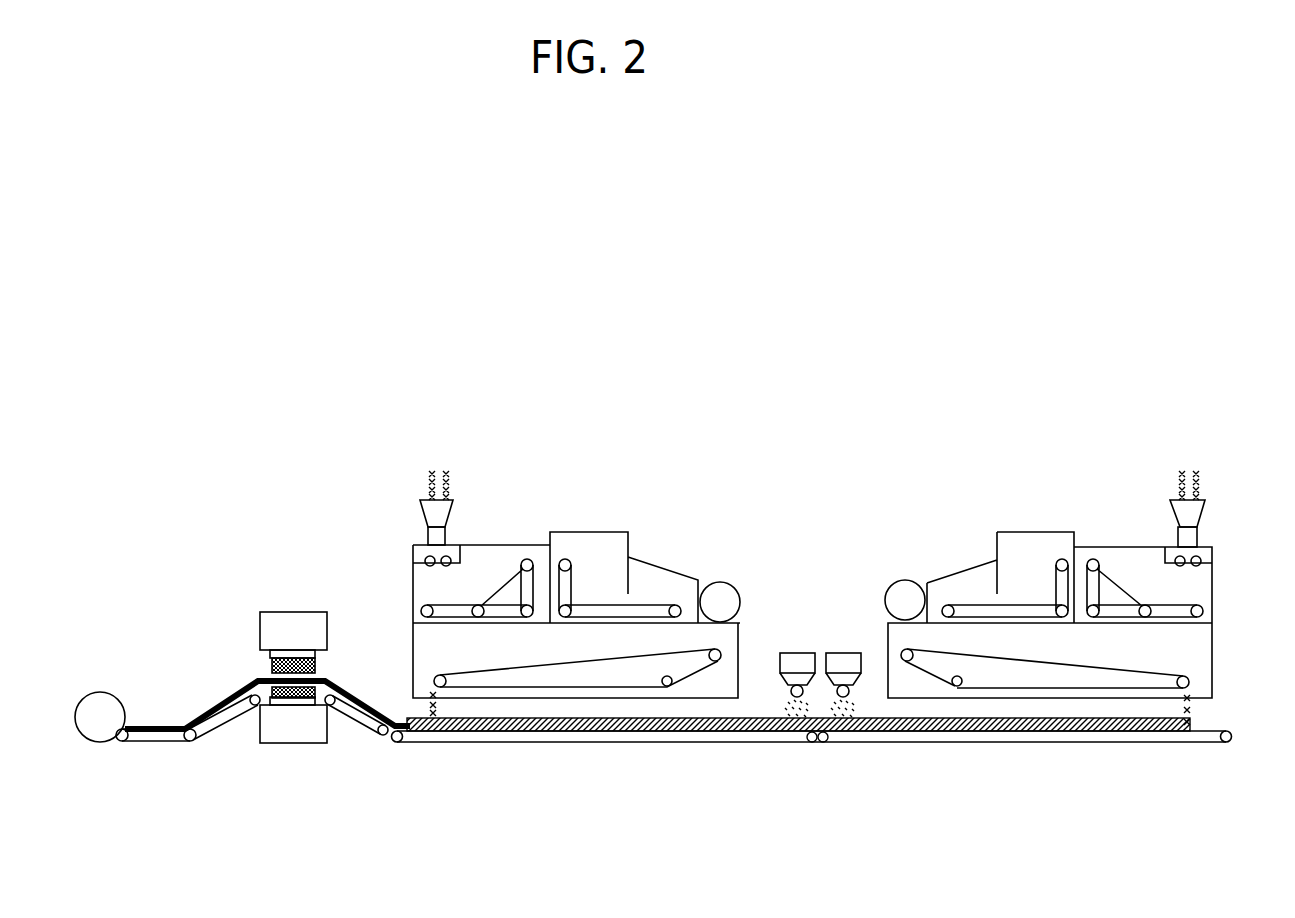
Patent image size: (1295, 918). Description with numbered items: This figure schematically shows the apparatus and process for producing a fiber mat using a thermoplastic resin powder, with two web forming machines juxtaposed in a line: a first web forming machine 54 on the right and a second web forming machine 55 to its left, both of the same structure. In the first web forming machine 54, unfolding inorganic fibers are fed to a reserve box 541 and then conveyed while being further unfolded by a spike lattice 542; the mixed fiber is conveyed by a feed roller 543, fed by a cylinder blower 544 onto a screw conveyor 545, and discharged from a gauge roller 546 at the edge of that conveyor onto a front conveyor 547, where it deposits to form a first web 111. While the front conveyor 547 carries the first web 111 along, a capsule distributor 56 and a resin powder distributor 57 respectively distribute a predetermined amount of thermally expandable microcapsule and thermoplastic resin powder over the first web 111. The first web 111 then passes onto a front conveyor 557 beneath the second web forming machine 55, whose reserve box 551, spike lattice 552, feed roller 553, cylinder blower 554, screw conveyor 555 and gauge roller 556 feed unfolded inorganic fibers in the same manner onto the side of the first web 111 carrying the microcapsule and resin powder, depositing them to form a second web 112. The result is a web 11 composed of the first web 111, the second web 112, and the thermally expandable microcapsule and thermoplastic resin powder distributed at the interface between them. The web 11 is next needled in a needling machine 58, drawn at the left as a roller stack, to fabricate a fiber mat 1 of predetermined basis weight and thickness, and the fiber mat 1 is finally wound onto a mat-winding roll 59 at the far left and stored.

The fiber mat 1 is at (237, 698).
The web 11 is at (327, 670).
The second web 112 is at (380, 668).
The mat-winding roll 59 is at (105, 703).
The needling machine 58 is at (302, 610).
The second web forming machine 55 is at (583, 440).
The reserve box 551 is at (453, 505).
The spike lattice 552 is at (485, 608).
The feed roller 553 is at (612, 607).
The cylinder blower 554 is at (732, 590).
The screw conveyor 555 is at (627, 680).
The gauge roller 556 is at (443, 678).
The front conveyor 557 is at (498, 738).
The resin powder distributor 57 is at (783, 652).
The capsule distributor 56 is at (835, 652).
The first web forming machine 54 is at (1092, 450).
The reserve box 541 is at (1200, 495).
The spike lattice 542 is at (1143, 607).
The feed roller 543 is at (1030, 607).
The cylinder blower 544 is at (900, 593).
The screw conveyor 545 is at (997, 667).
The gauge roller 546 is at (1187, 677).
The front conveyor 547 is at (900, 740).
The first web 111 is at (1045, 740).